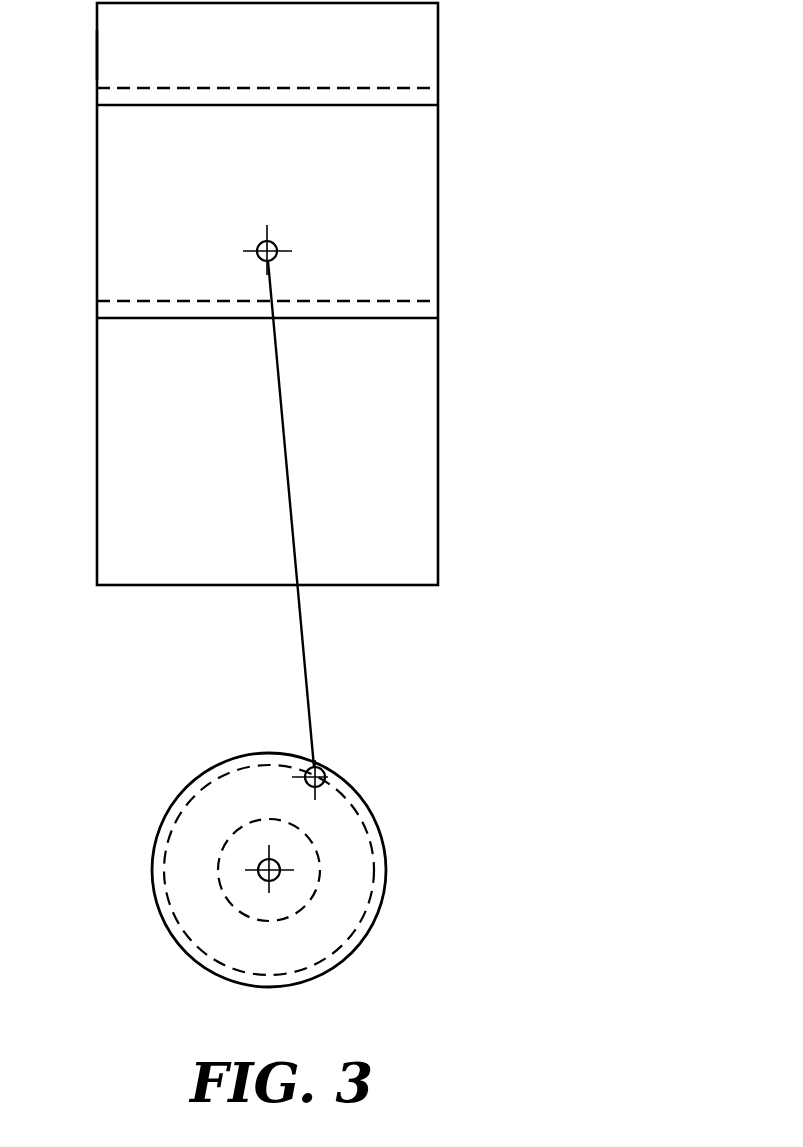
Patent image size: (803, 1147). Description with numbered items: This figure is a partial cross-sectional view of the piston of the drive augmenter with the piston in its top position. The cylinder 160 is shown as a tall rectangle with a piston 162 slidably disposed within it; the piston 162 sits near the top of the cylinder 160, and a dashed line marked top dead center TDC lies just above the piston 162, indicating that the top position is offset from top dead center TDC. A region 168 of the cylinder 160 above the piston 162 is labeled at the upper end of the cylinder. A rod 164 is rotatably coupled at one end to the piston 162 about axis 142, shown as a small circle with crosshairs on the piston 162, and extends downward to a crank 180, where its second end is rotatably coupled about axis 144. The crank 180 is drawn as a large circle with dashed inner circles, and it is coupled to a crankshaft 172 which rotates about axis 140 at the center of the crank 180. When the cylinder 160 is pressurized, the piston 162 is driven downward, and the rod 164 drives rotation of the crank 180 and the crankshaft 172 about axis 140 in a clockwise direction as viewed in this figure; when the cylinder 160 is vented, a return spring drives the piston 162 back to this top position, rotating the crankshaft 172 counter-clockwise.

The axis 140 is at (258, 873).
The axis 142 is at (278, 245).
The axis 144 is at (328, 772).
The cylinder 160 is at (438, 18).
The piston 162 is at (412, 105).
The rod 164 is at (306, 653).
The combustion chamber region 168 is at (144, 64).
The crankshaft 172 is at (228, 843).
The crank 180 is at (388, 814).
The top dead center TDC is at (407, 86).